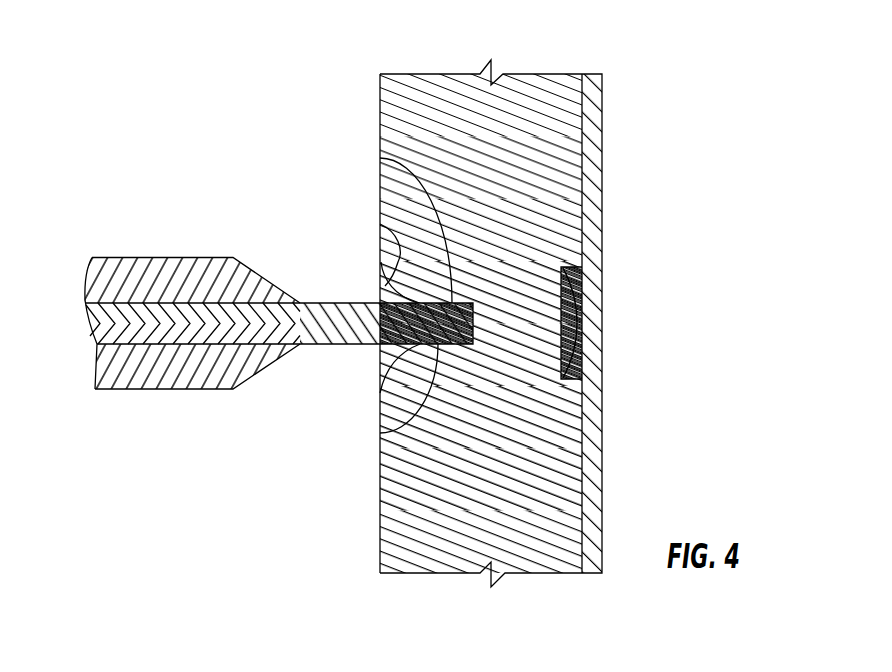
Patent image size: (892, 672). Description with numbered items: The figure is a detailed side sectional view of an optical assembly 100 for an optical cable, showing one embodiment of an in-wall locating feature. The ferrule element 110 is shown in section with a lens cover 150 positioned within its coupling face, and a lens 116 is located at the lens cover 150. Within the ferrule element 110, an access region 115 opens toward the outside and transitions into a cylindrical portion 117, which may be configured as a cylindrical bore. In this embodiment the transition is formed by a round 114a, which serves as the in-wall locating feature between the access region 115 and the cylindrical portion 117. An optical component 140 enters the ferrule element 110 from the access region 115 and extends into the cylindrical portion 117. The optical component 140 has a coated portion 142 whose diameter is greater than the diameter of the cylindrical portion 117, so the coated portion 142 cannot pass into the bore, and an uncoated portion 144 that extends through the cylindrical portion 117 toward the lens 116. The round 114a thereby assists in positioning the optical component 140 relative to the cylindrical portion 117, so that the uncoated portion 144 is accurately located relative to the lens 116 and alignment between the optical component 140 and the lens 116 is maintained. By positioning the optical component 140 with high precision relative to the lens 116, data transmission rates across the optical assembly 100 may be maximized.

The optical assembly 100 is at (745, 98).
The ferrule element 110 is at (422, 581).
The round 114a is at (380, 225).
The access region 115 is at (380, 508).
The lens 116 is at (567, 286).
The cylindrical portion 117 is at (380, 160).
The optical component 140 is at (157, 418).
The coated portion 142 is at (190, 257).
The uncoated portion 144 is at (380, 432).
The lens cover 150 is at (606, 152).